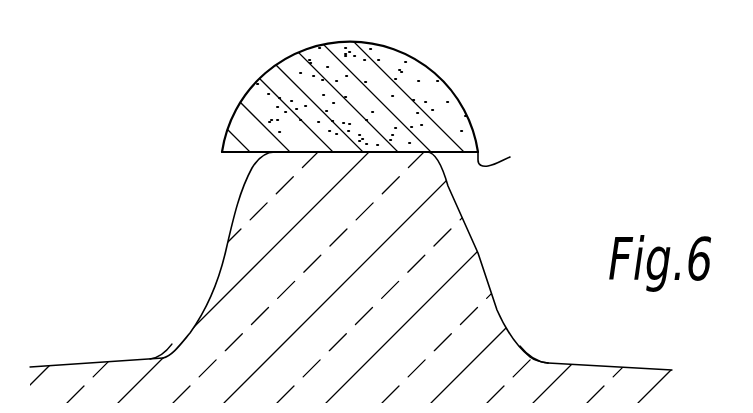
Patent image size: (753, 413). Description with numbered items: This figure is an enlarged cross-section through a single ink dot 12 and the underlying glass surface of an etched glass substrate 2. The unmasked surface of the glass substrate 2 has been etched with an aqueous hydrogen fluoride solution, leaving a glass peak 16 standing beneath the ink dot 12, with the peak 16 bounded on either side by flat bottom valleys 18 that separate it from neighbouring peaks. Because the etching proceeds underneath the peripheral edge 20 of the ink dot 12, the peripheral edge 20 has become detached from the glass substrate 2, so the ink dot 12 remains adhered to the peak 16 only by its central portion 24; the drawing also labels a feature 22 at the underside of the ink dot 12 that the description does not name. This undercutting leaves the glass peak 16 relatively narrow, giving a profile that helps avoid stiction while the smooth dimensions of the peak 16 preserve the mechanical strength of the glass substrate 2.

The glass substrate 2 is at (373, 387).
The ink dot 12 is at (447, 112).
The glass peak 16 is at (425, 222).
The flat bottom valley 18 is at (168, 348).
The peripheral edge 20 is at (510, 158).
The interface layer 22 is at (333, 151).
The central portion 24 is at (358, 133).